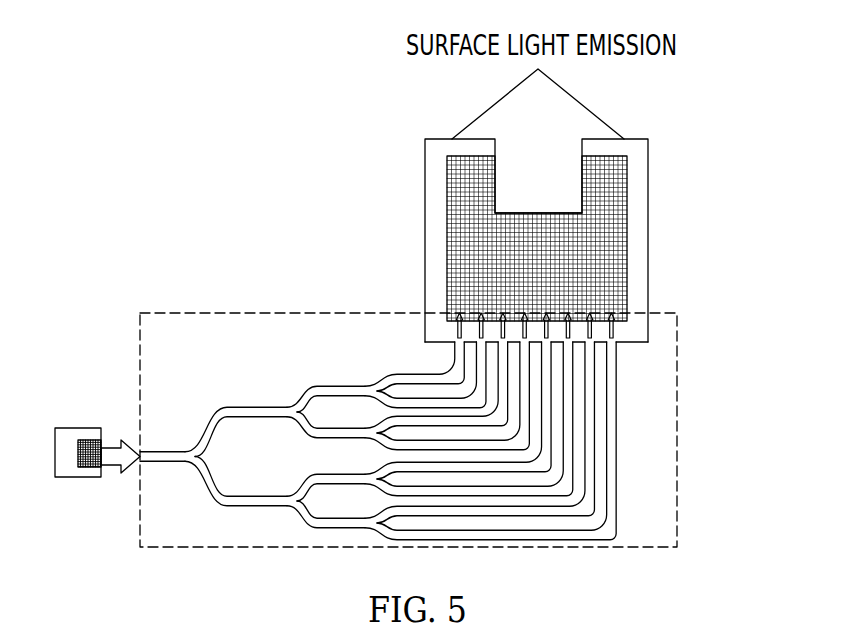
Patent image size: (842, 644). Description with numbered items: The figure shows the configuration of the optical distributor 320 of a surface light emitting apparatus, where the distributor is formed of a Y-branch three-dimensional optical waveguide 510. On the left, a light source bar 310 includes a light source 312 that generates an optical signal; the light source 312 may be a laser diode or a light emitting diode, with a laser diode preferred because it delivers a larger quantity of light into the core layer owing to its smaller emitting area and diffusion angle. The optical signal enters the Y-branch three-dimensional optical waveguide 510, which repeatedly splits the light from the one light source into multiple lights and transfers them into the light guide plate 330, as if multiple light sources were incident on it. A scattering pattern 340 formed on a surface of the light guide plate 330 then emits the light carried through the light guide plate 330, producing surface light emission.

The light source bar 310 is at (66, 433).
The light source 312 is at (90, 478).
The optical distributor 320 is at (680, 402).
The light guide plate 330 is at (643, 221).
The scattering pattern 340 is at (607, 190).
The Y-branch 3D optical waveguide 510 is at (245, 408).